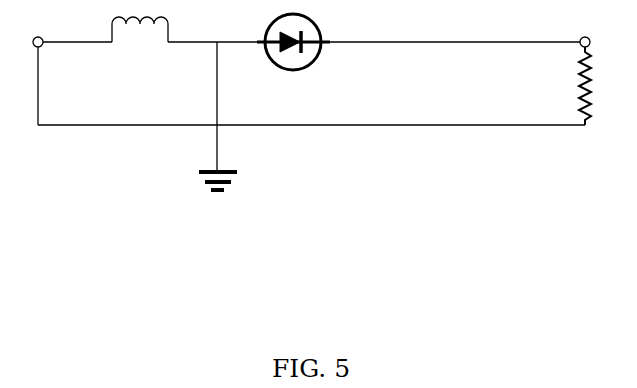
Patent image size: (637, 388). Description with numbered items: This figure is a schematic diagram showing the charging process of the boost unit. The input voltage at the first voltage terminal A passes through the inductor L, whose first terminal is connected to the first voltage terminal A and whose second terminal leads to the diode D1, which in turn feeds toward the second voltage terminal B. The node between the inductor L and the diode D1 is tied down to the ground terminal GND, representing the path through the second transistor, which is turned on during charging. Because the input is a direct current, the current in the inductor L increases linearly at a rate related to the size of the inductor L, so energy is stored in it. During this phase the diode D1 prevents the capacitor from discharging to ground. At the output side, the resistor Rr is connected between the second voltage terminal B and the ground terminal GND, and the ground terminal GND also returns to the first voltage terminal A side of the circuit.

The first voltage terminal A is at (37, 32).
The second voltage terminal B is at (584, 32).
The inductor L is at (140, 40).
The diode D1 is at (293, 56).
The resistor Rr is at (570, 86).
The ground terminal GND is at (198, 157).